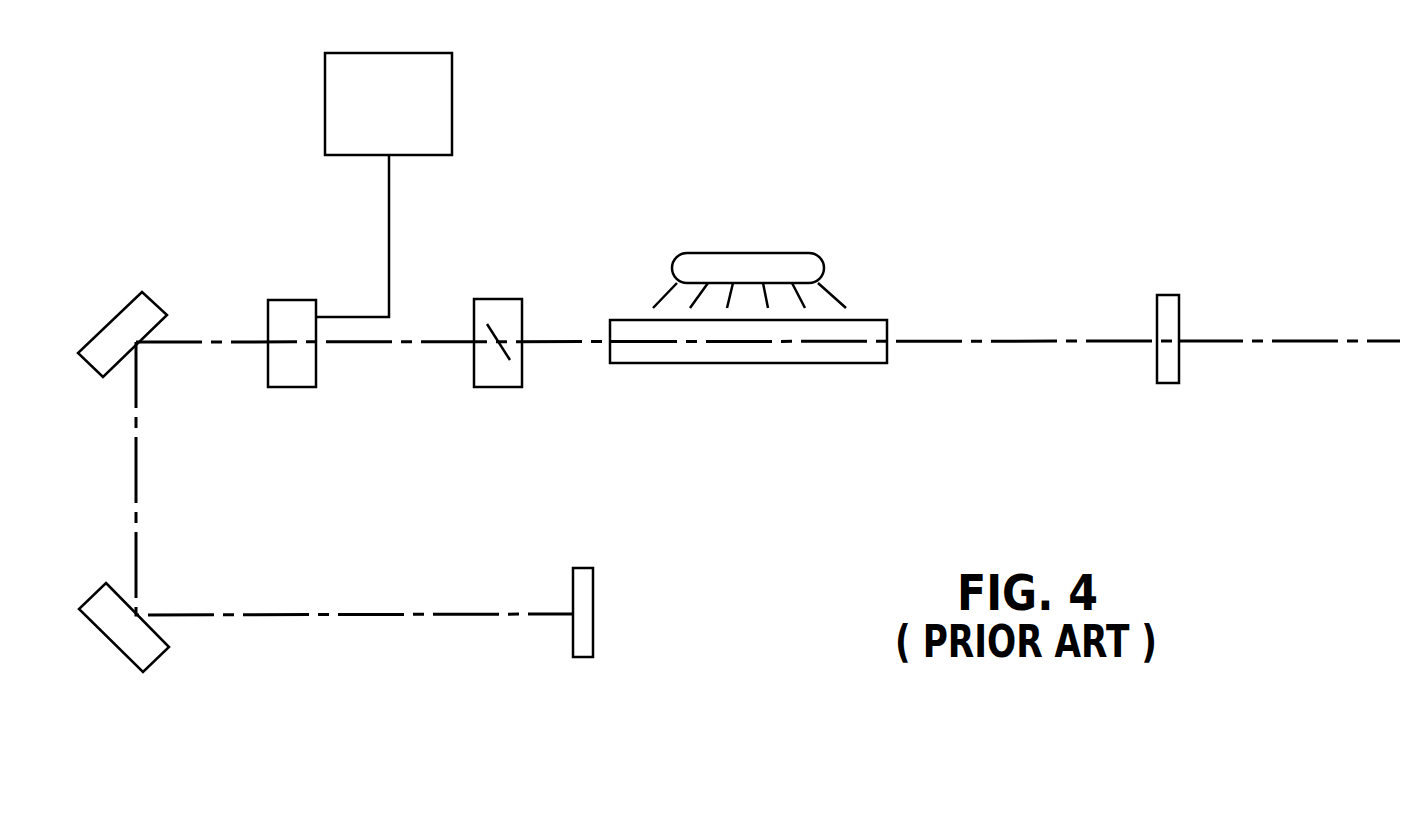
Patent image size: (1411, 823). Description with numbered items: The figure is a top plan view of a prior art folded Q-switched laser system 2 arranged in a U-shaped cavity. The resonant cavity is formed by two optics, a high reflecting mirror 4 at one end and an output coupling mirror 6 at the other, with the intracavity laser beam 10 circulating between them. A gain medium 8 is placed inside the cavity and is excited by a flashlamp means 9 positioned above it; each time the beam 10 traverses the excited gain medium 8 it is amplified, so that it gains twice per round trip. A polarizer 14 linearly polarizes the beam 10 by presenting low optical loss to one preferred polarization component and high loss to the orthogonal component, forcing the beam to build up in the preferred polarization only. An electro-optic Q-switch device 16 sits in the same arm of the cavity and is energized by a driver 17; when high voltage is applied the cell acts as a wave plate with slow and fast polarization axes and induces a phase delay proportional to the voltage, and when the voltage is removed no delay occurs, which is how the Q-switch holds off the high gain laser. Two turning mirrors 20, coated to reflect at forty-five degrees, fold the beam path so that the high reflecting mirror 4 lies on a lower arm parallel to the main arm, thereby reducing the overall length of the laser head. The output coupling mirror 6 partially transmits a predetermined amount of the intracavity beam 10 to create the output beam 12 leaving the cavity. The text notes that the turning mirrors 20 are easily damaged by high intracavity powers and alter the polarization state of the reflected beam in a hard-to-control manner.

The Q-switched laser system 2 is at (950, 111).
The high reflecting mirror 4 is at (582, 568).
The output coupling mirror 6 is at (1168, 298).
The gain medium 8 is at (872, 320).
The flashlamp means 9 is at (807, 253).
The intracavity laser beam 10 is at (1018, 340).
The output beam 12 is at (1310, 340).
The polarizer 14 is at (502, 299).
The electro-optic Q-switch device 16 is at (295, 300).
The driver 17 is at (452, 80).
The turning mirrors 20 is at (132, 292).